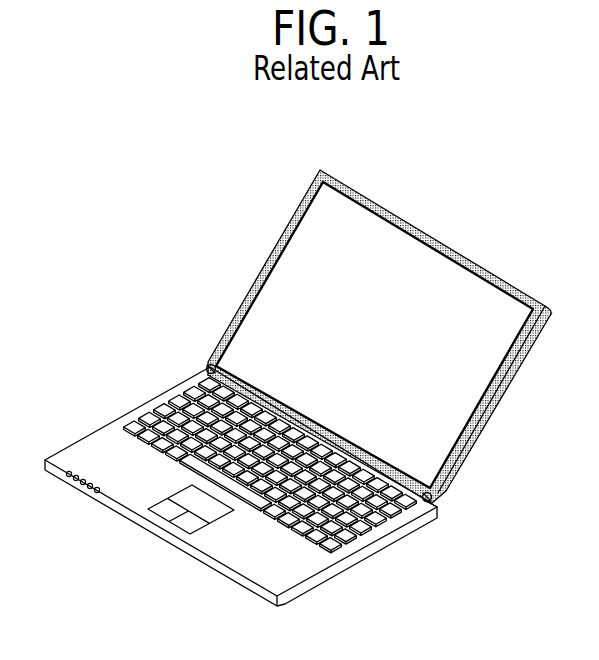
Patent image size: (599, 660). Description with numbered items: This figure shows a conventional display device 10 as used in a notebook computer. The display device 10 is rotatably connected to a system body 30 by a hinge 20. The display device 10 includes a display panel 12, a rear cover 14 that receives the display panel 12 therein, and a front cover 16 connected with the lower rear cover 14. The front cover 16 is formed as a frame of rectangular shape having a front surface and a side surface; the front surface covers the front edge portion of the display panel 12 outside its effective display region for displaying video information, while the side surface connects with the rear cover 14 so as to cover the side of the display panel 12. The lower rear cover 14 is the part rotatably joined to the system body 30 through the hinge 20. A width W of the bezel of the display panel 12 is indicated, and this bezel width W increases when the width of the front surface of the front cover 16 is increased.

The display device 10 is at (376, 318).
The display panel 12 is at (483, 292).
The rear cover 14 is at (518, 380).
The front cover 16 is at (432, 234).
The hinge 20 is at (206, 365).
The system body 30 is at (132, 408).
The width of the bezel W is at (320, 172).